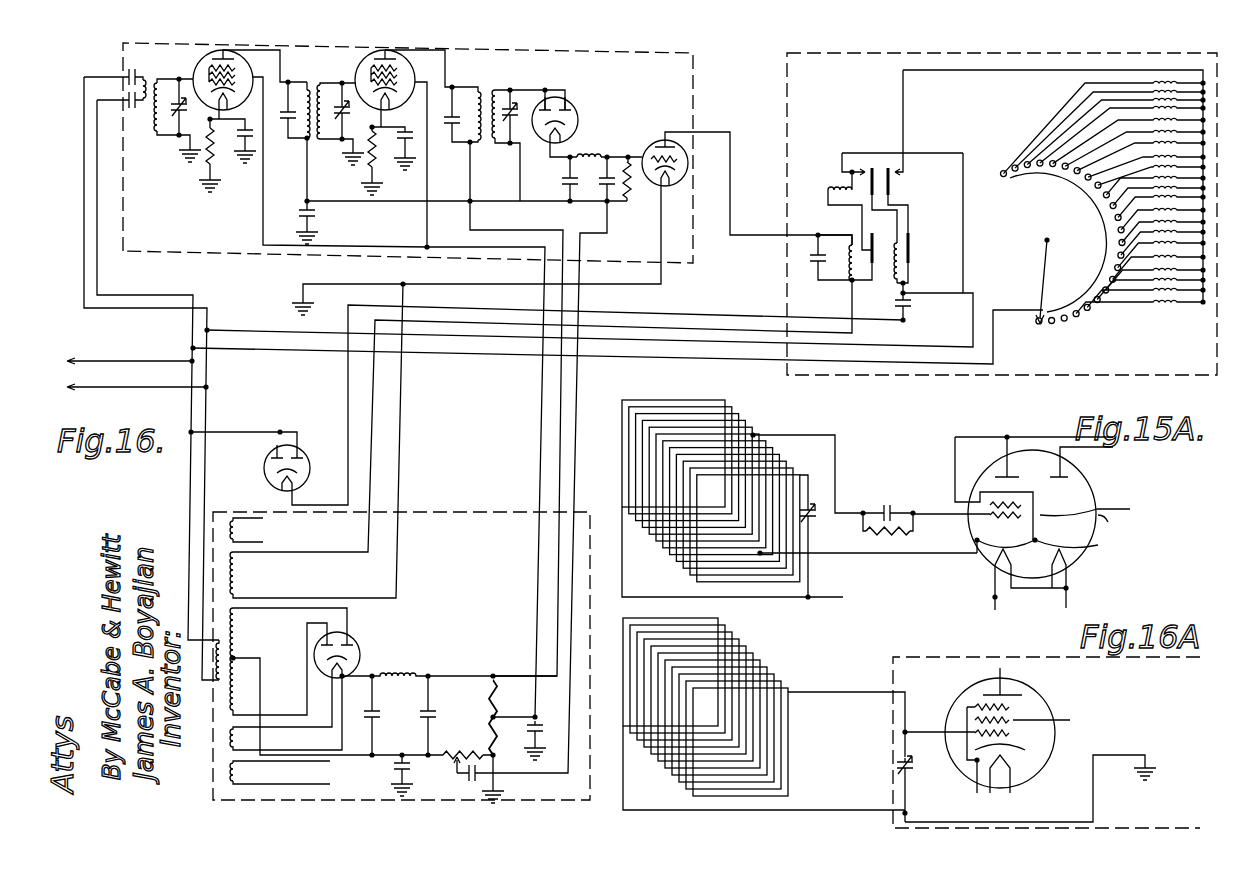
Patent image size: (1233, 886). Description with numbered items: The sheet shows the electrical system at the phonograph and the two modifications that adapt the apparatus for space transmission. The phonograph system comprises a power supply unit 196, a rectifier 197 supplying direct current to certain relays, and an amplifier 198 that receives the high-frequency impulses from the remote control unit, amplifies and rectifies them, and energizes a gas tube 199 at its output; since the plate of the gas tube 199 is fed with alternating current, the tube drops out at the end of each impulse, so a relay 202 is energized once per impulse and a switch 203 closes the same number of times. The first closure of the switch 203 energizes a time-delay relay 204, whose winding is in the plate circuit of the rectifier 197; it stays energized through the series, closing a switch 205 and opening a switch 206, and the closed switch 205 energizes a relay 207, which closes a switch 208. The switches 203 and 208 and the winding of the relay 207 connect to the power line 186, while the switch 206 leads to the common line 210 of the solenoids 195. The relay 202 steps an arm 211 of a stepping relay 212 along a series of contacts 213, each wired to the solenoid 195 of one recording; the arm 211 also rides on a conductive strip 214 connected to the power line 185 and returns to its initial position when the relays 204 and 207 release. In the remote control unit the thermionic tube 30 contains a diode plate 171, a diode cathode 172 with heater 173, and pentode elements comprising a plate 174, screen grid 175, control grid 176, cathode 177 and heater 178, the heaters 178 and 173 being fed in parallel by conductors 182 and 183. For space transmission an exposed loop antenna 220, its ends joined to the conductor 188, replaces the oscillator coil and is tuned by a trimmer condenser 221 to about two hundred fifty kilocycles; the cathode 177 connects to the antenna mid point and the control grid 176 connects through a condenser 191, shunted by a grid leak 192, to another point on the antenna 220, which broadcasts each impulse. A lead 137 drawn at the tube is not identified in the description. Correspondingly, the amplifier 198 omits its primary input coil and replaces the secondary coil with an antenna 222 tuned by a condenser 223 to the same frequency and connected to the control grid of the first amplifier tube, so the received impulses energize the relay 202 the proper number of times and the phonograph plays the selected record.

In FIG. 16, the amplifier 198 is at (694, 72).
In FIG. 16, the gas tube 199 is at (679, 177).
In FIG. 16, the relay 202 is at (816, 262).
In FIG. 16, the switch 203 is at (858, 272).
In FIG. 16, the time-delay relay 204 is at (835, 188).
In FIG. 16, the switch 205 is at (872, 166).
In FIG. 16, the switch 206 is at (892, 190).
In FIG. 16, the relay 207 is at (892, 272).
In FIG. 16, the switch 208 is at (909, 236).
In FIG. 16, the common line 210 is at (1017, 70).
In FIG. 16, the arm 211 is at (1040, 292).
In FIG. 16, the stepping relay 212 is at (1106, 200).
In FIG. 16, the contacts 213 is at (1116, 247).
In FIG. 16, the conductive strip 214 is at (1055, 178).
In FIG. 16, the solenoids 195 is at (1165, 303).
In FIG. 16, the rectifier 197 is at (312, 455).
In FIG. 16, the power supply unit 196 is at (456, 518).
In FIG. 16, the power line 185 is at (90, 362).
In FIG. 16, the power line 186 is at (90, 388).
In FIG. 15A, the power line 186 is at (1100, 518).
In FIG. 16, the loop antenna 220 is at (622, 407).
In FIG. 16, the trimmer condenser 221 is at (812, 522).
In FIG. 16, the conductor 188 is at (843, 597).
In FIG. 16, the condenser 191 is at (897, 492).
In FIG. 16, the grid leak 192 is at (911, 533).
In FIG. 15A, the thermionic tube 30 is at (1095, 497).
In FIG. 15A, the conductor 137 is at (1053, 436).
In FIG. 15A, the diode plate 171 is at (1050, 472).
In FIG. 15A, the plate 174 is at (997, 476).
In FIG. 15A, the screen grid 175 is at (980, 490).
In FIG. 15A, the control grid 176 is at (990, 515).
In FIG. 15A, the diode cathode 172 is at (1096, 506).
In FIG. 15A, the cathode 177 is at (1098, 545).
In FIG. 15A, the heater 178 is at (997, 565).
In FIG. 15A, the heater 173 is at (1070, 573).
In FIG. 15A, the conductor 182 is at (995, 598).
In FIG. 15A, the conductor 183 is at (1067, 608).
In FIG. 16A, the antenna 222 is at (623, 623).
In FIG. 16A, the condenser 223 is at (898, 760).